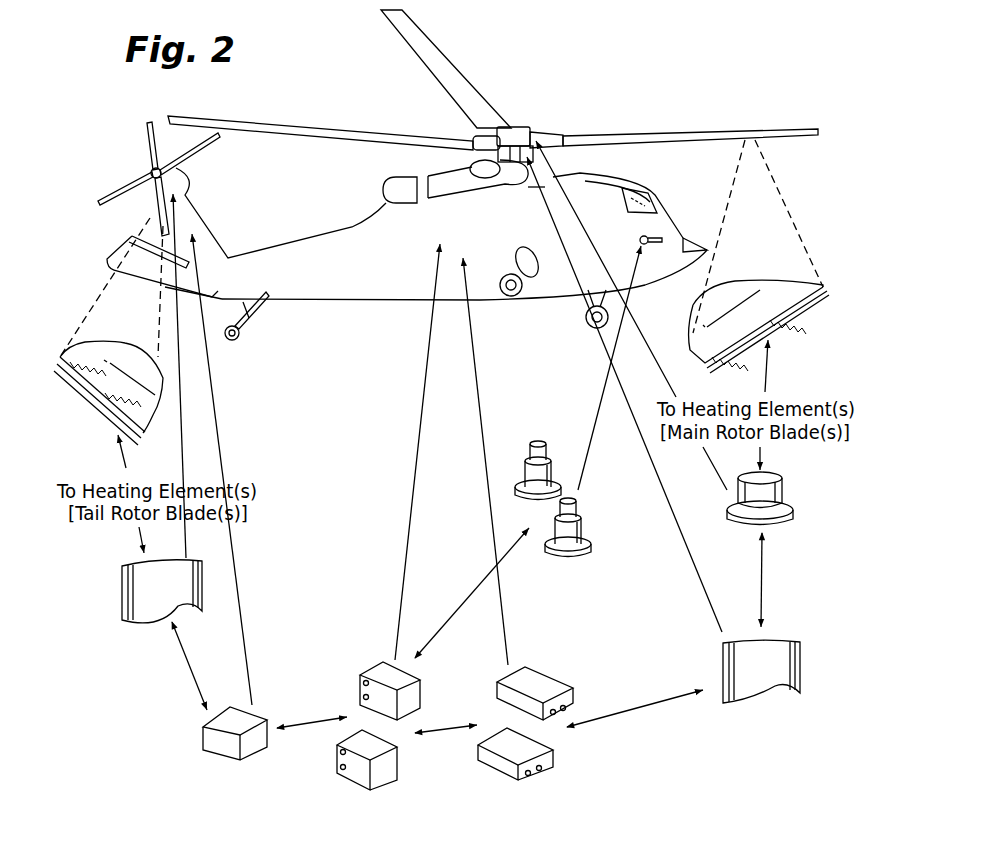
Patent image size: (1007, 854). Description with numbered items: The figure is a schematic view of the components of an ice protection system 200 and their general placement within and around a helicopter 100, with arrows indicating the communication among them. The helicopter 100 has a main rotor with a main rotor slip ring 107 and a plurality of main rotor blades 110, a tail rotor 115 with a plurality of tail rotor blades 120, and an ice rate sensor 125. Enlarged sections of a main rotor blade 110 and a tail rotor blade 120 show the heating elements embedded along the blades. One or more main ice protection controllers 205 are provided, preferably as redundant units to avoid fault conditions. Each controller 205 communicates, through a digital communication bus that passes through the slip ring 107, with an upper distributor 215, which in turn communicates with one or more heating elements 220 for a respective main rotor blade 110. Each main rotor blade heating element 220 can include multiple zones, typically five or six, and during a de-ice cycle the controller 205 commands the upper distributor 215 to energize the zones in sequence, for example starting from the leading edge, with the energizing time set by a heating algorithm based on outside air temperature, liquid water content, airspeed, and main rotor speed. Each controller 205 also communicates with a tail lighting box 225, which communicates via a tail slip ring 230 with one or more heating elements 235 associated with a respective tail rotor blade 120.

The helicopter 100 is at (340, 312).
The main rotor slip ring 107 is at (777, 650).
The main rotor blades 110 is at (782, 322).
The tail rotor 115 is at (120, 183).
The tail rotor blades 120 is at (124, 356).
The ice rate sensor 125 is at (524, 462).
The ice protection system 200 is at (670, 130).
The main ice protection controller 205 is at (376, 670).
The upper distributor 215 is at (783, 490).
The heating elements 220 is at (543, 683).
The tail lighting box 225 is at (217, 747).
The tail slip ring 230 is at (140, 612).
The heating elements 235 is at (78, 384).